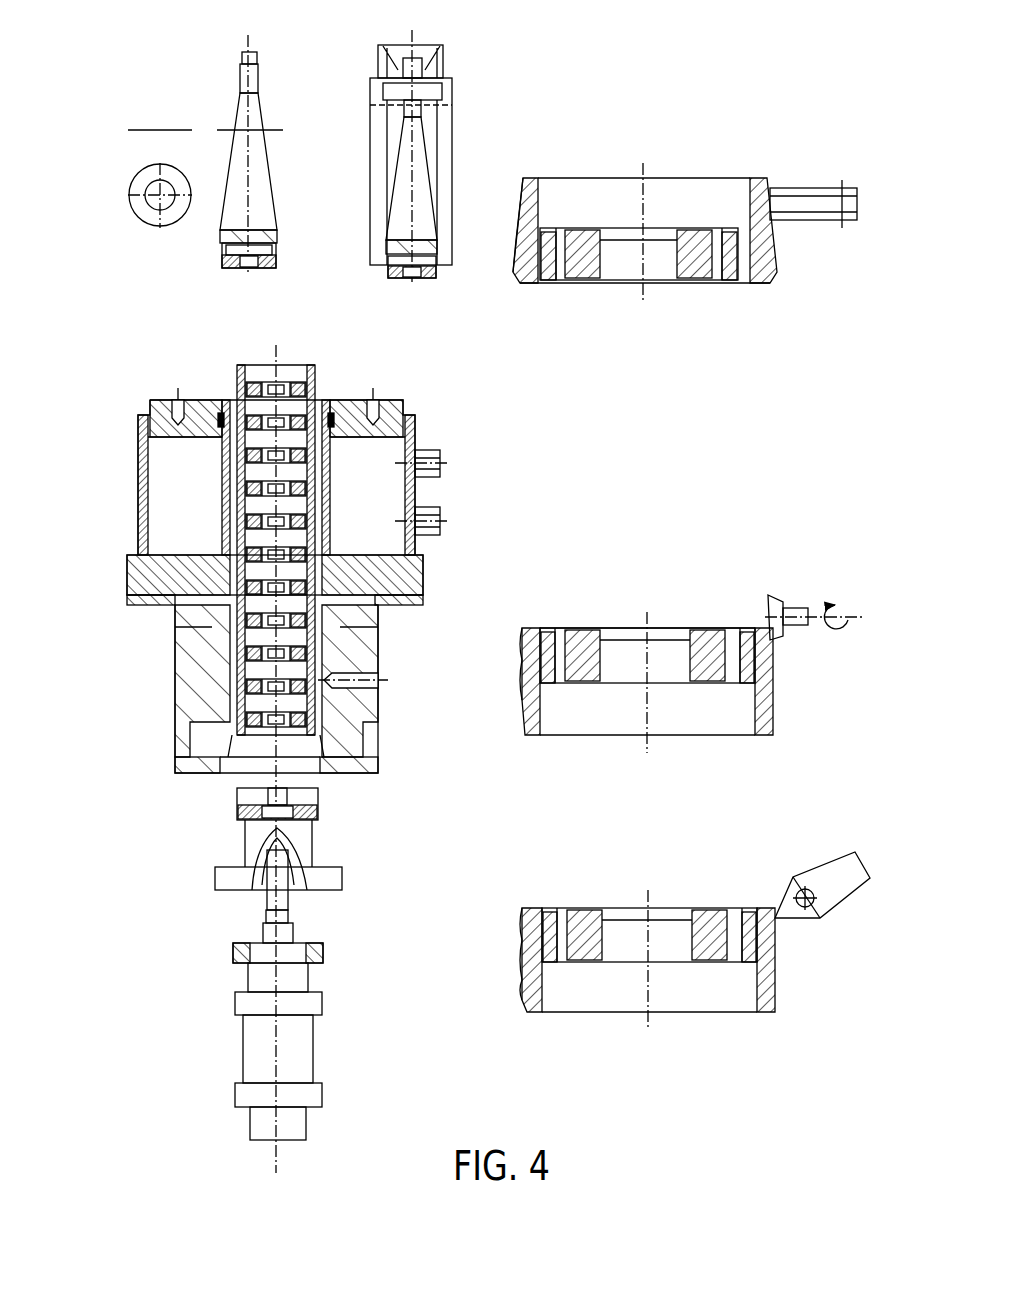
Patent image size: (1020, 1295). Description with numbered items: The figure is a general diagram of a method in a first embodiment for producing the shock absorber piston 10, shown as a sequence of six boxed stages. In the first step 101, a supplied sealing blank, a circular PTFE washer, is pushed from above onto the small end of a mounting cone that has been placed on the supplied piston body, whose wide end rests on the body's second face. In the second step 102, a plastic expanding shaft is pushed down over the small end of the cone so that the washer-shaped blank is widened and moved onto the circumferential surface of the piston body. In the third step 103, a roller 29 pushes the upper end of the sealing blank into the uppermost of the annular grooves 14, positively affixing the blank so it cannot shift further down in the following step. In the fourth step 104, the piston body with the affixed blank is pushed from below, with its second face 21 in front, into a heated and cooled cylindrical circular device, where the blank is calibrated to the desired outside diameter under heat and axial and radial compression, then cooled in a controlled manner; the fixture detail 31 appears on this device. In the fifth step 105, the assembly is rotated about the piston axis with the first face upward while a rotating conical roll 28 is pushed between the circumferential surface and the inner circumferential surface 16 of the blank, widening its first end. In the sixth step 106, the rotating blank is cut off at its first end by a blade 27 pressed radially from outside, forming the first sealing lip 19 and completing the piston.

The piston 10 is at (566, 878).
The annular grooves 14 is at (521, 207).
The inner circumferential surface 16 is at (531, 640).
The first sealing lip 19 is at (521, 914).
The second face 21 is at (258, 240).
The blade 27 is at (803, 880).
The rotating conical roll 28 is at (788, 596).
The roller 29 is at (789, 185).
The press fixture 31 is at (418, 441).
The first step 101 is at (228, 178).
The second step 102 is at (388, 143).
The third step 103 is at (675, 220).
The fourth step 104 is at (304, 742).
The fifth step 105 is at (666, 657).
The sixth step 106 is at (666, 942).